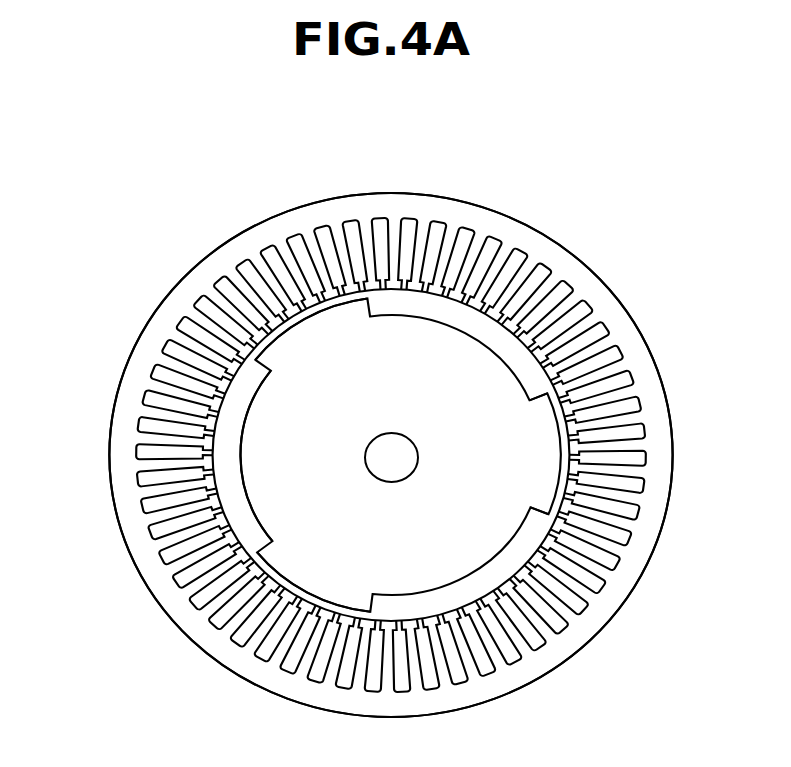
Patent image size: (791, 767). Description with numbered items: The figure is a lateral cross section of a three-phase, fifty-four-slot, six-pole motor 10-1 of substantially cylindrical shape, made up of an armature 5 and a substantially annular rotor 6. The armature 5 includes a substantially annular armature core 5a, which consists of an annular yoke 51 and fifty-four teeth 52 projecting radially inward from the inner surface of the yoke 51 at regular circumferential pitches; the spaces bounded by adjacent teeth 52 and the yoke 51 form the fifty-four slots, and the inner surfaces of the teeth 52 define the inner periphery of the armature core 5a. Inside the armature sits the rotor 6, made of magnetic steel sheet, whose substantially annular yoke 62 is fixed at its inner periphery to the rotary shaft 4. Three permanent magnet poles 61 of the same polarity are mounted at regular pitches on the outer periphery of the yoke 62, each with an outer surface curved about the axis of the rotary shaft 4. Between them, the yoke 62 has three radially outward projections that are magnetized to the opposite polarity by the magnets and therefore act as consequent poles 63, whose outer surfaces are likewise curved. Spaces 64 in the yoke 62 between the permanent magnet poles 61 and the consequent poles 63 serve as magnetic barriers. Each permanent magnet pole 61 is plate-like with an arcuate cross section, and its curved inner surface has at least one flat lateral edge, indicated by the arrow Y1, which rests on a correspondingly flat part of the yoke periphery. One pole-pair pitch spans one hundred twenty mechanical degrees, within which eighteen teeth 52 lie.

The motor 10-1 is at (386, 171).
The rotary shaft 4 is at (388, 452).
The armature 5 is at (663, 392).
The armature core 5a is at (390, 455).
The yoke 51 is at (390, 455).
The teeth 52 is at (596, 297).
The rotor 6 is at (272, 479).
The permanent magnet poles 61 is at (256, 456).
The yoke 62 is at (311, 329).
The consequent poles 63 is at (313, 582).
The spaces 64 is at (540, 510).
The arrow indicating flat lateral edge Y1 is at (539, 396).